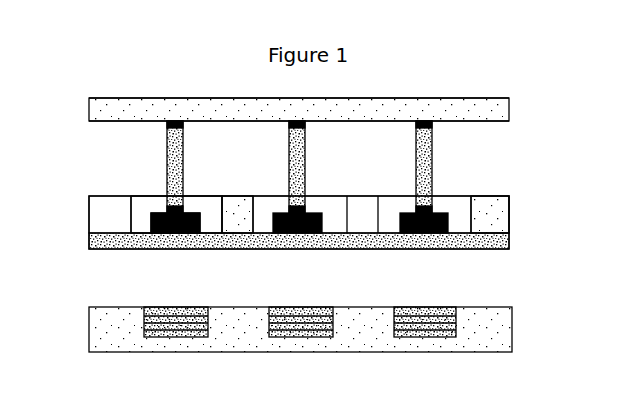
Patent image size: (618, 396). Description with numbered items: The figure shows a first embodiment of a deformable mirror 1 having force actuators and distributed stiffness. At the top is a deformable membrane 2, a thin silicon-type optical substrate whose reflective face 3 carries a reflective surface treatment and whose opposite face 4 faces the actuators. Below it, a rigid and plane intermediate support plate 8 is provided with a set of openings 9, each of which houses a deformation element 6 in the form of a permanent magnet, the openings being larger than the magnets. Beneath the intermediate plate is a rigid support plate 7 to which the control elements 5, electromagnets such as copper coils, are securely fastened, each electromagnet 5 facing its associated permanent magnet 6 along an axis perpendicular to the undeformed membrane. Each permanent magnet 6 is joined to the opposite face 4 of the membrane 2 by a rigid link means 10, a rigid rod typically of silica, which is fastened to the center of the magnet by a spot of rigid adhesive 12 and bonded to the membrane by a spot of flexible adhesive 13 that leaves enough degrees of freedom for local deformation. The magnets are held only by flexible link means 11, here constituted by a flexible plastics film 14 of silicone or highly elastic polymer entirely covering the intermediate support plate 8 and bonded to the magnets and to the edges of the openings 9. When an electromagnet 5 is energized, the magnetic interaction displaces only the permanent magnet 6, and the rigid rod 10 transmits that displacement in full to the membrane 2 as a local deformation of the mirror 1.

The deformable mirror 1 is at (399, 86).
The deformable membrane 2 is at (503, 110).
The reflective face 3 is at (478, 98).
The opposite face 4 is at (478, 121).
The control element 5 is at (150, 327).
The deformation element 6 is at (167, 231).
The support plate 7 is at (503, 340).
The intermediate support plate 8 is at (503, 218).
The openings 9 is at (143, 204).
The rigid link means 10 is at (177, 155).
The flexible link means 11 is at (514, 242).
The spot of rigid adhesive 12 is at (180, 233).
The spot of flexible adhesive 13 is at (175, 120).
The flexible plastics film 14 is at (488, 243).